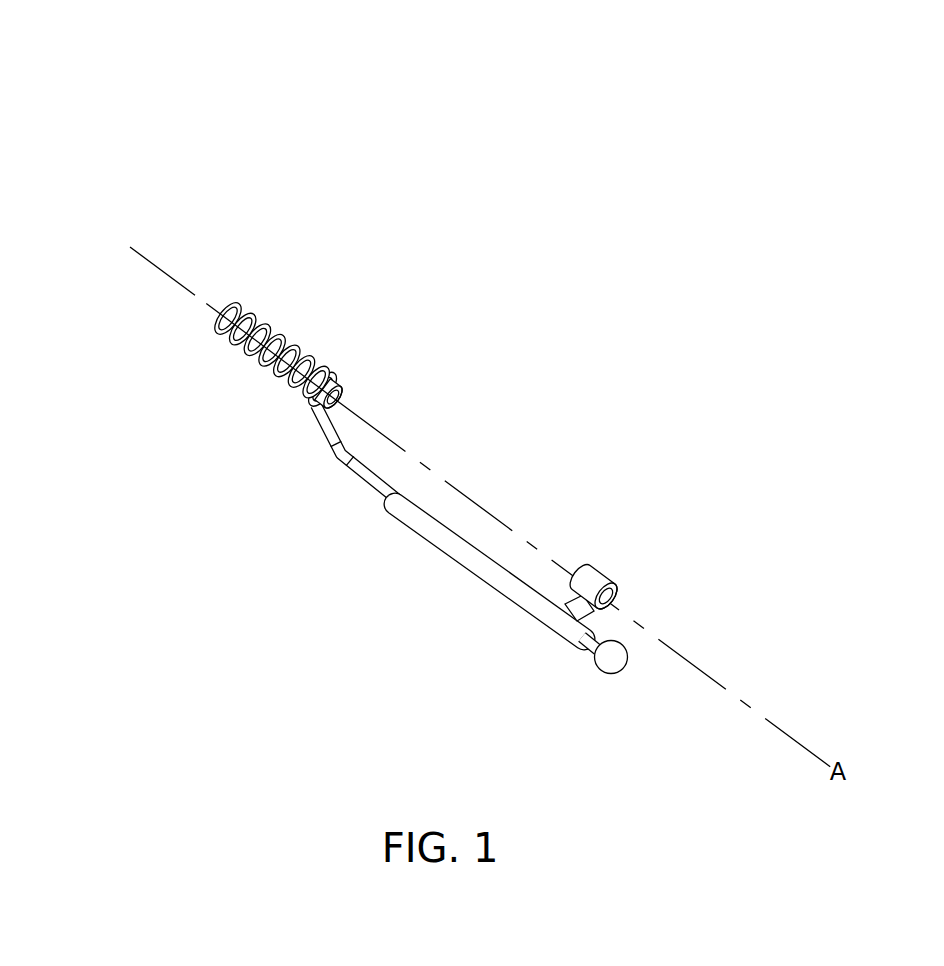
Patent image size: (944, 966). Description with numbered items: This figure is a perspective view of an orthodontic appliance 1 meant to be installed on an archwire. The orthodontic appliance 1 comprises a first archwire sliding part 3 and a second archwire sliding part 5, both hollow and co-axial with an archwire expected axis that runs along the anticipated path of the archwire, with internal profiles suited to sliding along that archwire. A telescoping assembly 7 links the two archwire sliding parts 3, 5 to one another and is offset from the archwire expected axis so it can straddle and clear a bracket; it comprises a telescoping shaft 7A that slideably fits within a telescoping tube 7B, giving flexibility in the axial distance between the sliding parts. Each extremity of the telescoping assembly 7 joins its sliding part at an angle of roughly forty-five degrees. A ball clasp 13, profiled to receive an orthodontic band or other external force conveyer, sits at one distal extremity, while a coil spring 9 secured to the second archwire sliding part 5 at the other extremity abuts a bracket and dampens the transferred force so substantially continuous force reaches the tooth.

The orthodontic appliance 1 is at (138, 60).
The first archwire sliding part 3 is at (580, 567).
The second archwire sliding part 5 is at (302, 386).
The telescoping assembly 7 is at (429, 529).
The telescoping shaft 7A is at (348, 485).
The telescoping tube 7B is at (385, 550).
The spring 9 is at (277, 331).
The ball clasp 13 is at (628, 675).